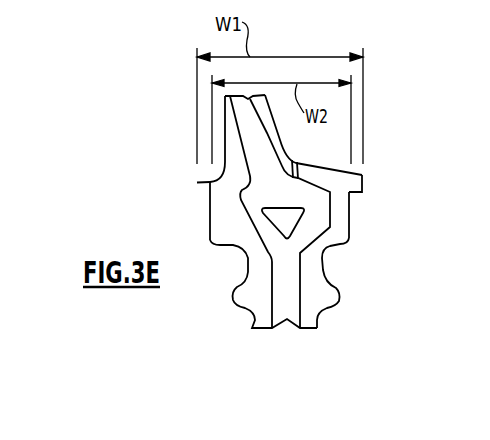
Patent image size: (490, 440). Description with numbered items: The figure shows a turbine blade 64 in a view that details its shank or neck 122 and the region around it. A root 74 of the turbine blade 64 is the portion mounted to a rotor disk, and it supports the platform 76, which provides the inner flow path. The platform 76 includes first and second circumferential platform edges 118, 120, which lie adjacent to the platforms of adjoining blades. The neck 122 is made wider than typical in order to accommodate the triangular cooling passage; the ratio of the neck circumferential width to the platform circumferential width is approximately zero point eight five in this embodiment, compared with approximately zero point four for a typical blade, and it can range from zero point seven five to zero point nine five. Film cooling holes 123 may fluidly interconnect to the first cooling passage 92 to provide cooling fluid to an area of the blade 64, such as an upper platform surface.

The turbine blade 64 is at (396, 163).
The root 74 is at (250, 285).
The platform 76 is at (320, 168).
The first cooling passage 92 is at (310, 256).
The first circumferential platform edge 118 is at (197, 182).
The second circumferential platform edge 120 is at (363, 186).
The shank or neck 122 is at (337, 225).
The film cooling holes 123 is at (298, 170).